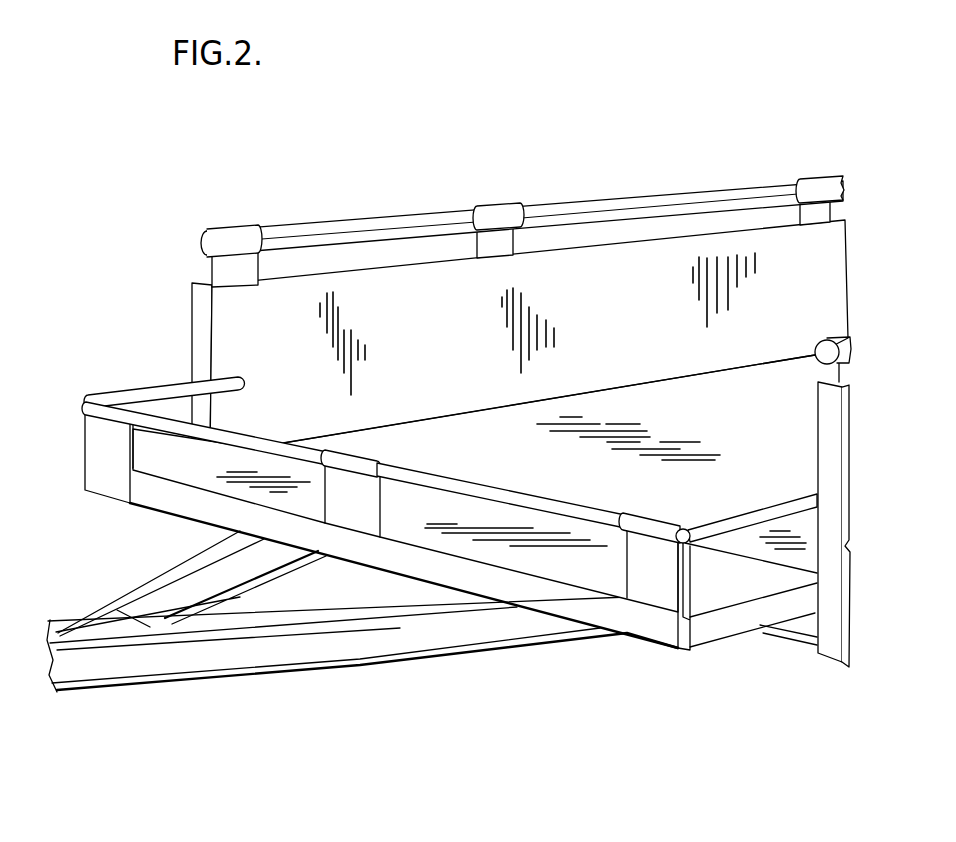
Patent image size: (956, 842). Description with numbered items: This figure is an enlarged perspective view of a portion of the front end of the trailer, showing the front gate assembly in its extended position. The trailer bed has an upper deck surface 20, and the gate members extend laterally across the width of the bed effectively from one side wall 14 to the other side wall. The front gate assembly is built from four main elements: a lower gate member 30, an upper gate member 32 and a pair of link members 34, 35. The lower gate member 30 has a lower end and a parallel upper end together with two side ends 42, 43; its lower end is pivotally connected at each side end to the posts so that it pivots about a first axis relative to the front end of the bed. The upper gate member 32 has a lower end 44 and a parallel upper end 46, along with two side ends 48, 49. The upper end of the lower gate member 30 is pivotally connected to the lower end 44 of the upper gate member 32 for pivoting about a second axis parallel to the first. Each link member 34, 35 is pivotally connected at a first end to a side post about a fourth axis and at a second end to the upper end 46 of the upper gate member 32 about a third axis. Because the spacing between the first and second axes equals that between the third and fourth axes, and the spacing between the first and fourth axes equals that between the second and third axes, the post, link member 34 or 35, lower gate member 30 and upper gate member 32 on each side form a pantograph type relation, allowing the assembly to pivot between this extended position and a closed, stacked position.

The side wall 14 is at (586, 318).
The upper deck surface 20 is at (701, 438).
The lower gate member 30 is at (698, 588).
The upper gate member 32 is at (621, 554).
The link member 34 is at (152, 383).
The link member 35 is at (771, 511).
The side end 42 is at (163, 453).
The side end 43 is at (770, 618).
The lower end 44 is at (382, 572).
The upper end 46 is at (487, 492).
The side end 48 is at (85, 440).
The side end 49 is at (672, 598).